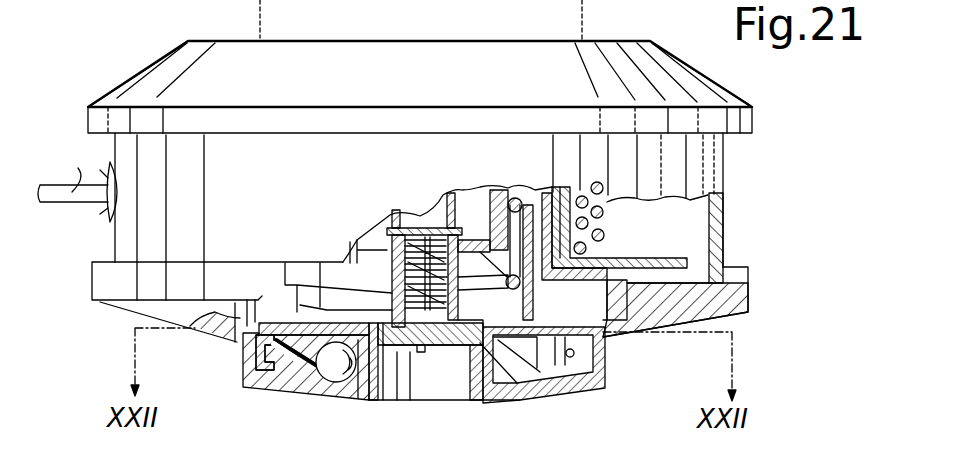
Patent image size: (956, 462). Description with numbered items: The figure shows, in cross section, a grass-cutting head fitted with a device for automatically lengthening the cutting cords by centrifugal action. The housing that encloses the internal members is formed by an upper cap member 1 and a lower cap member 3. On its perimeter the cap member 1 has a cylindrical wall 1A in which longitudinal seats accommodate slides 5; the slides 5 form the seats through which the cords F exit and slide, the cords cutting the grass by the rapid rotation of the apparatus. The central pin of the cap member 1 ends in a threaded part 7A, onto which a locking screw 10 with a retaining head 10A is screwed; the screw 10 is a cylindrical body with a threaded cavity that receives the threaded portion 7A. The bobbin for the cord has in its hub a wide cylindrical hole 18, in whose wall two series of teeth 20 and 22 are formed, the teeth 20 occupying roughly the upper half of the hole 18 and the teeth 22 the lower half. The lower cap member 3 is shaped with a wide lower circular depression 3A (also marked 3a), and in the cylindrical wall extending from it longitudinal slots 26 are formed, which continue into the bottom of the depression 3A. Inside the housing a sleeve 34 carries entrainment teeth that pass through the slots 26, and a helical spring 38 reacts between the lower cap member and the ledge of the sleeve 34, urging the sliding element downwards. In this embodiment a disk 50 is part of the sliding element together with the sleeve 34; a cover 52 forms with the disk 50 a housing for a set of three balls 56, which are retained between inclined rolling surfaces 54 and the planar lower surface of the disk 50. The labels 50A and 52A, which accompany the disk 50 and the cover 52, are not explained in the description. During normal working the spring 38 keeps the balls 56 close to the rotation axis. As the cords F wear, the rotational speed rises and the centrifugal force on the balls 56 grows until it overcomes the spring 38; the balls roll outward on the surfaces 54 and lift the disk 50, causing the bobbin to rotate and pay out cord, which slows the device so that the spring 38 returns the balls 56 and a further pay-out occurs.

The upper cap member 1 is at (143, 60).
The cylindrical wall 1A is at (725, 222).
The lower cap member 3 is at (114, 314).
The lower circular depression 3A is at (607, 299).
The slides 5 is at (104, 216).
The threaded part 7A is at (367, 250).
The locking screw 10 is at (529, 402).
The retaining head 10A is at (458, 375).
The teeth 22 is at (602, 240).
The sleeve 34 is at (294, 345).
The helical spring 38 is at (470, 250).
The disk 50 is at (588, 322).
The spring end 50A is at (575, 358).
The cover 52 is at (299, 390).
The leaf spring end 52A is at (478, 385).
The inclined rolling surfaces 54 is at (321, 372).
The balls 56 is at (358, 398).
The longitudinal slots 26 is at (552, 454).
The cylindrical hole 18 is at (634, 454).
The teeth 20 is at (667, 454).
The lower circular depression 3a is at (717, 454).